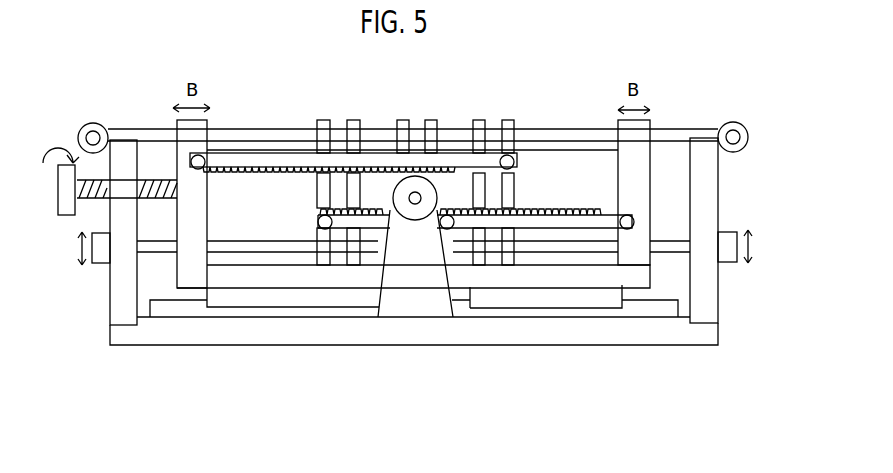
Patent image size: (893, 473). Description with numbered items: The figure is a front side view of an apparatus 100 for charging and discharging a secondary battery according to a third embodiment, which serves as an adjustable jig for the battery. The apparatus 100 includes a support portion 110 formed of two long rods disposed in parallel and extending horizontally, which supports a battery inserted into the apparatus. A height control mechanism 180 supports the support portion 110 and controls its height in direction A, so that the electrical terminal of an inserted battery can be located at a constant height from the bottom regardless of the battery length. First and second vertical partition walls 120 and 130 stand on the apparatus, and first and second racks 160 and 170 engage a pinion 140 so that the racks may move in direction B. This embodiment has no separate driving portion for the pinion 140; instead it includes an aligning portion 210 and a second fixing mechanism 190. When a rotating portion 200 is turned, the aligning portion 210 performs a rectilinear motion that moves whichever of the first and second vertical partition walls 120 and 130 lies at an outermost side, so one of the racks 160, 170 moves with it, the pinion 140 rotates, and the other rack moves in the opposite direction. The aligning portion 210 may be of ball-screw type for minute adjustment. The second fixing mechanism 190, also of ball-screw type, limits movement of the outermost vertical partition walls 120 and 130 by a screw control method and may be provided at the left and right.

The apparatus for charging and discharging 100 is at (107, 60).
The support portion 110 is at (668, 240).
The first vertical partition wall 120 is at (477, 120).
The second vertical partition wall 130 is at (507, 120).
The pinion 140 is at (399, 196).
The first rack 160 is at (553, 229).
The second rack 170 is at (285, 152).
The height control mechanism 180 is at (718, 295).
The second fixing mechanism 190 is at (63, 217).
The rotating portion 200 is at (733, 122).
The aligning portion 210 is at (668, 128).